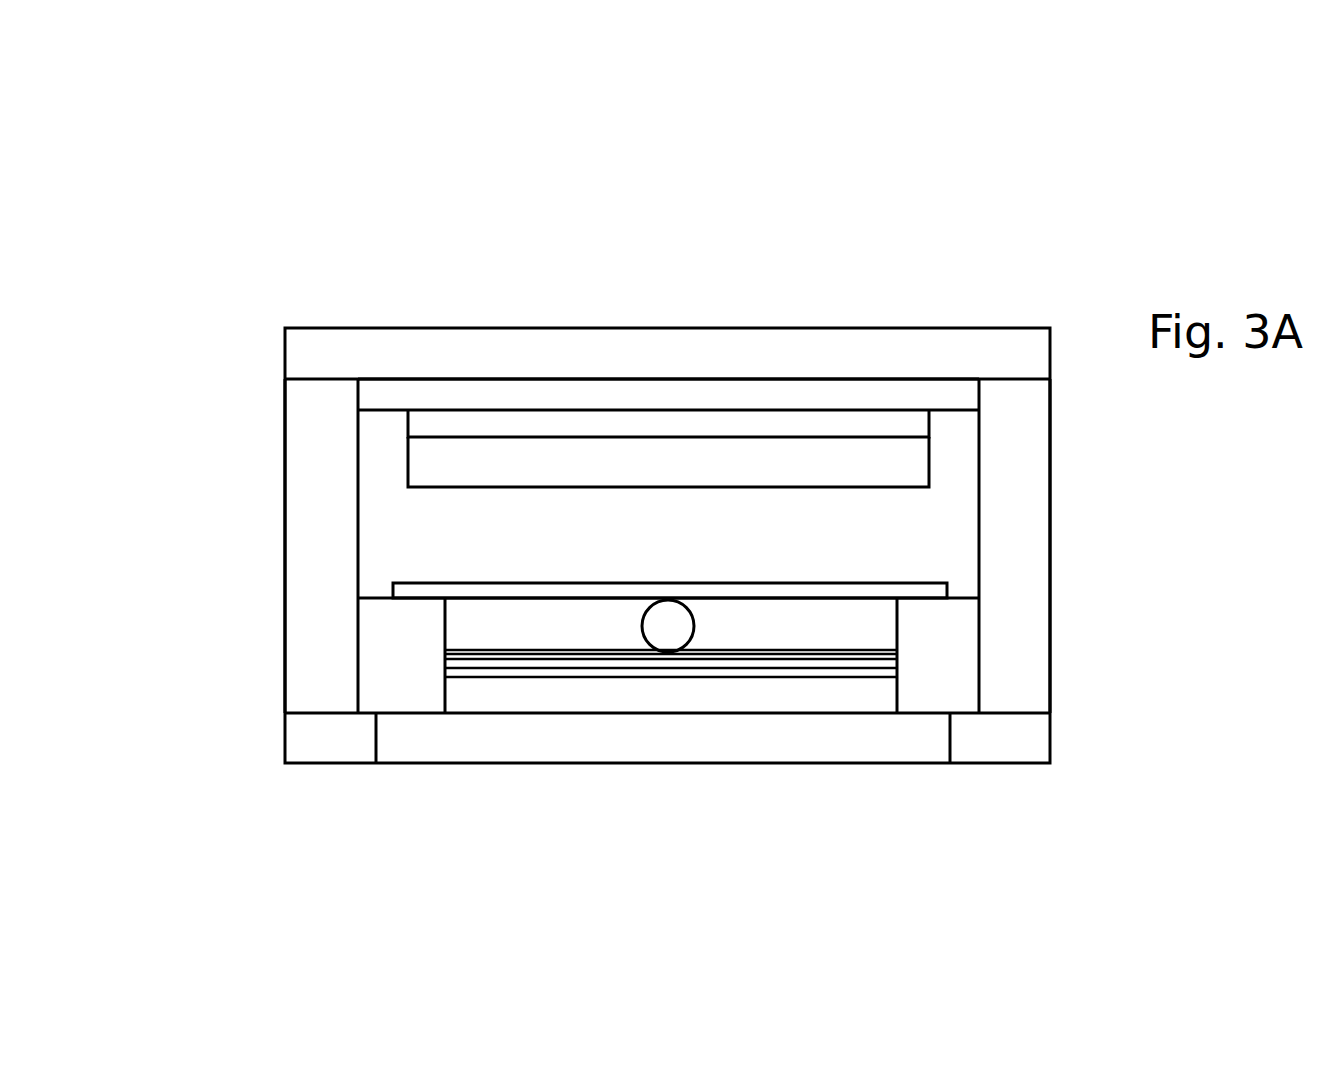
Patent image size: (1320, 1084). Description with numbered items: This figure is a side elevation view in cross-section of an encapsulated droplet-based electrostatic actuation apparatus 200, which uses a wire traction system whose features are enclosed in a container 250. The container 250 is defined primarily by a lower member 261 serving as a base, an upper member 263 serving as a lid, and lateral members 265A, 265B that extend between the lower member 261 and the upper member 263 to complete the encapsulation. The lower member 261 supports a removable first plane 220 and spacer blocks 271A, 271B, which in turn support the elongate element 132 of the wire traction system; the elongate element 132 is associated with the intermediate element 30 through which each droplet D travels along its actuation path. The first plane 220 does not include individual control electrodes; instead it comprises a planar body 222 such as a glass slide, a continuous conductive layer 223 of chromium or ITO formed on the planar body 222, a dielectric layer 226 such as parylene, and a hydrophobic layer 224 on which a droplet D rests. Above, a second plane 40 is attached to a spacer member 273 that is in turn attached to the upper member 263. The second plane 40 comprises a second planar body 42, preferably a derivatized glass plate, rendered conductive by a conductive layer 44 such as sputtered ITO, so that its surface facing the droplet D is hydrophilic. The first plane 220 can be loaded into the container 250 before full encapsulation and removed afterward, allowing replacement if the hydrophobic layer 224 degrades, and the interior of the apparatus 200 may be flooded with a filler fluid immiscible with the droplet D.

The encapsulated droplet-based electrostatic actuation apparatus 200 is at (1023, 257).
The container 250 is at (232, 356).
The upper member 263 is at (667, 328).
The spacer member 273 is at (447, 379).
The lateral member 265A is at (285, 538).
The lateral member 265B is at (1052, 482).
The lower member 261 is at (668, 763).
The spacer block 271A is at (375, 763).
The spacer block 271B is at (945, 763).
The second plane 40 is at (378, 460).
The conductive layer 44 is at (802, 409).
The second planar body 42 is at (898, 437).
The intermediate element 30 is at (372, 582).
The elongate element 132 is at (935, 581).
The first plane 220 is at (413, 667).
The planar body 222 is at (897, 693).
The conductive layer 223 is at (490, 677).
The dielectric layer 226 is at (565, 668).
The hydrophobic layer 224 is at (863, 660).
The droplet D is at (645, 648).